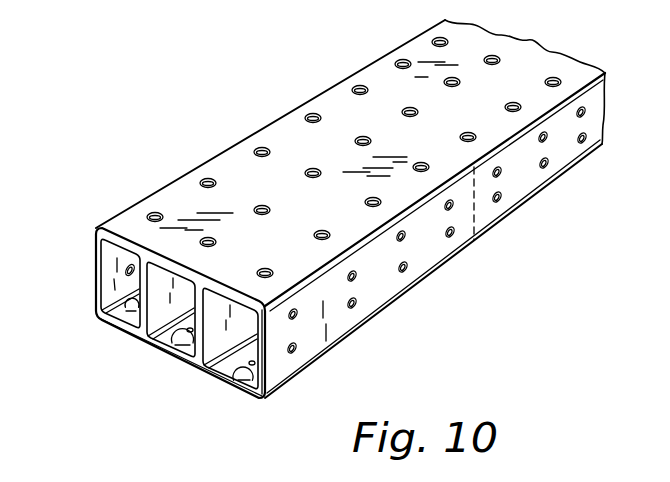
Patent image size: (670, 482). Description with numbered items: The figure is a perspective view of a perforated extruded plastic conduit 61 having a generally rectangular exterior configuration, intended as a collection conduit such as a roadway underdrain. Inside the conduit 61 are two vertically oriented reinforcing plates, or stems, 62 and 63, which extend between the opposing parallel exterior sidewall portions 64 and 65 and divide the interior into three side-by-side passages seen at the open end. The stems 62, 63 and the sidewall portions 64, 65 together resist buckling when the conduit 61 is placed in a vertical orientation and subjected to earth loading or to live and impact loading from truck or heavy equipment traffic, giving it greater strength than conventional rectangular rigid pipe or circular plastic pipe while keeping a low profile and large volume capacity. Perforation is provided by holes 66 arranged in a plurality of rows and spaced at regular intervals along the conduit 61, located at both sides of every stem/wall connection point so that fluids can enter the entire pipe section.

The perforated extruded plastic conduit 61 is at (160, 151).
The reinforcing stem 62 is at (116, 325).
The reinforcing stem 63 is at (195, 347).
The exterior sidewall portion 64 is at (97, 283).
The exterior sidewall portion 65 is at (264, 394).
The holes 66 is at (418, 166).